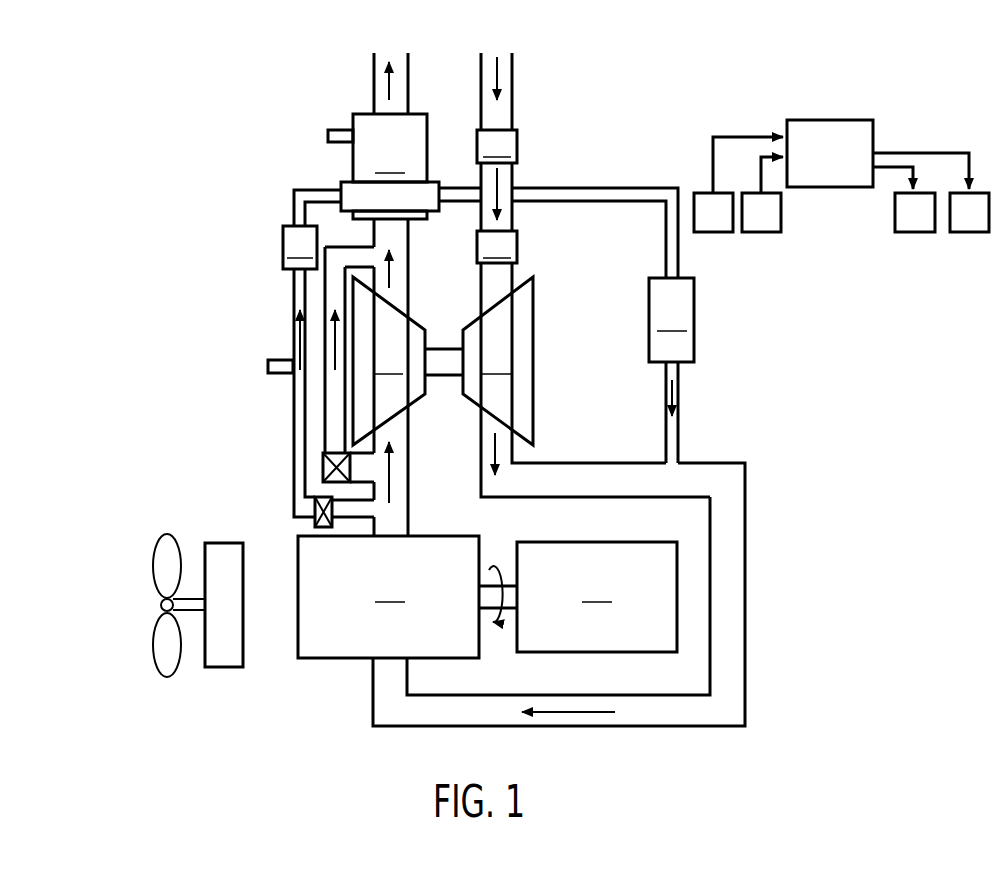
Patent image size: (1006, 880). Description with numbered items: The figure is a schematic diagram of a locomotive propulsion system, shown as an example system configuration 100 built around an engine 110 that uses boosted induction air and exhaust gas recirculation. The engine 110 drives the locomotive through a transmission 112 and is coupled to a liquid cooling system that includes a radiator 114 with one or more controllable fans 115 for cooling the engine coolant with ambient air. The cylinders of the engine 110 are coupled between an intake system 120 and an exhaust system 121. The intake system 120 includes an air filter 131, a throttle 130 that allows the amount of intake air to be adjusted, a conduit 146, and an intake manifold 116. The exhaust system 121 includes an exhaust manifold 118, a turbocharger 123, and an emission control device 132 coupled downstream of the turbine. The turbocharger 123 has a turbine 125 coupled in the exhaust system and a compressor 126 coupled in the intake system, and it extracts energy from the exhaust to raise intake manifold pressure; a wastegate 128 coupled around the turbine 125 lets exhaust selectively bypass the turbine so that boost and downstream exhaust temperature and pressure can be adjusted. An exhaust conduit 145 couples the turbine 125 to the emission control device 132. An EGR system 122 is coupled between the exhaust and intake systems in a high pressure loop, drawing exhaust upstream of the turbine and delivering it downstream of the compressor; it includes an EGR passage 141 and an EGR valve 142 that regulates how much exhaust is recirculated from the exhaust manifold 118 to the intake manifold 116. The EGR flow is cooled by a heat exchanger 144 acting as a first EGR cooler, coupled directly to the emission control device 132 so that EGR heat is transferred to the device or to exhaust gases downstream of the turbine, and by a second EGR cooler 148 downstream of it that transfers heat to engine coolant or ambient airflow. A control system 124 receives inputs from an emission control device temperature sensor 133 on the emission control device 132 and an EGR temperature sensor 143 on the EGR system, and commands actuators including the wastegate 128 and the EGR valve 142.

The system configuration 100 is at (84, 95).
The engine 110 is at (388, 597).
The transmission 112 is at (578, 597).
The radiator 114 is at (189, 528).
The controllable fans 115 is at (170, 678).
The intake manifold 116 is at (382, 673).
The exhaust manifold 118 is at (402, 525).
The intake system 120 is at (580, 139).
The exhaust system 121 is at (265, 147).
The EGR system 122 is at (236, 326).
The turbocharger 123 is at (449, 426).
The control system 124 is at (818, 94).
The turbine 125 is at (389, 361).
The compressor 126 is at (498, 361).
The wastegate 128 is at (331, 452).
The throttle 130 is at (497, 247).
The air filter 131 is at (497, 146).
The emission control device 132 is at (390, 148).
The emission control device temperature sensor 133 is at (327, 136).
The EGR passage 141 is at (293, 282).
The EGR valve 142 is at (322, 496).
The EGR temperature sensor 143 is at (267, 366).
The heat exchanger 144 is at (349, 181).
The exhaust conduit 145 is at (408, 230).
The conduit 146 is at (539, 501).
The second EGR cooler 148 is at (488, 325).